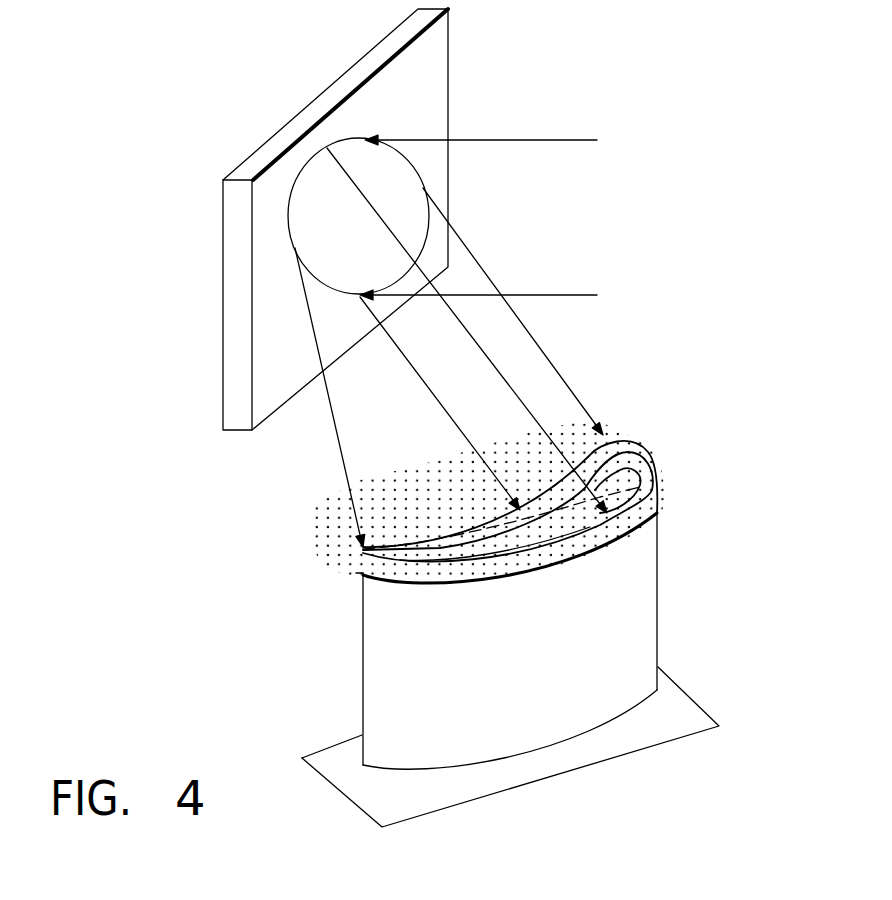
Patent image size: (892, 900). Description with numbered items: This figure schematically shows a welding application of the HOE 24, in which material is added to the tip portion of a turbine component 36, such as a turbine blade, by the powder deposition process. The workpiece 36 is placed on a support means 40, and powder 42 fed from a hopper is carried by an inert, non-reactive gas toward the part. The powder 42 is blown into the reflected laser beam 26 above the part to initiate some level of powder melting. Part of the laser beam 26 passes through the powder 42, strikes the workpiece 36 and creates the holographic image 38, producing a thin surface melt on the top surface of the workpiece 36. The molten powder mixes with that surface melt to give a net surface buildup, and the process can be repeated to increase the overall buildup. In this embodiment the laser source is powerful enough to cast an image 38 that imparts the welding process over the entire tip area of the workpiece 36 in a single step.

The HOE 24 is at (212, 305).
The reflected laser beam 26 is at (527, 216).
The turbine component 36 is at (659, 590).
The holographic image 38 is at (662, 436).
The support means 40 is at (644, 737).
The powder 42 is at (292, 537).